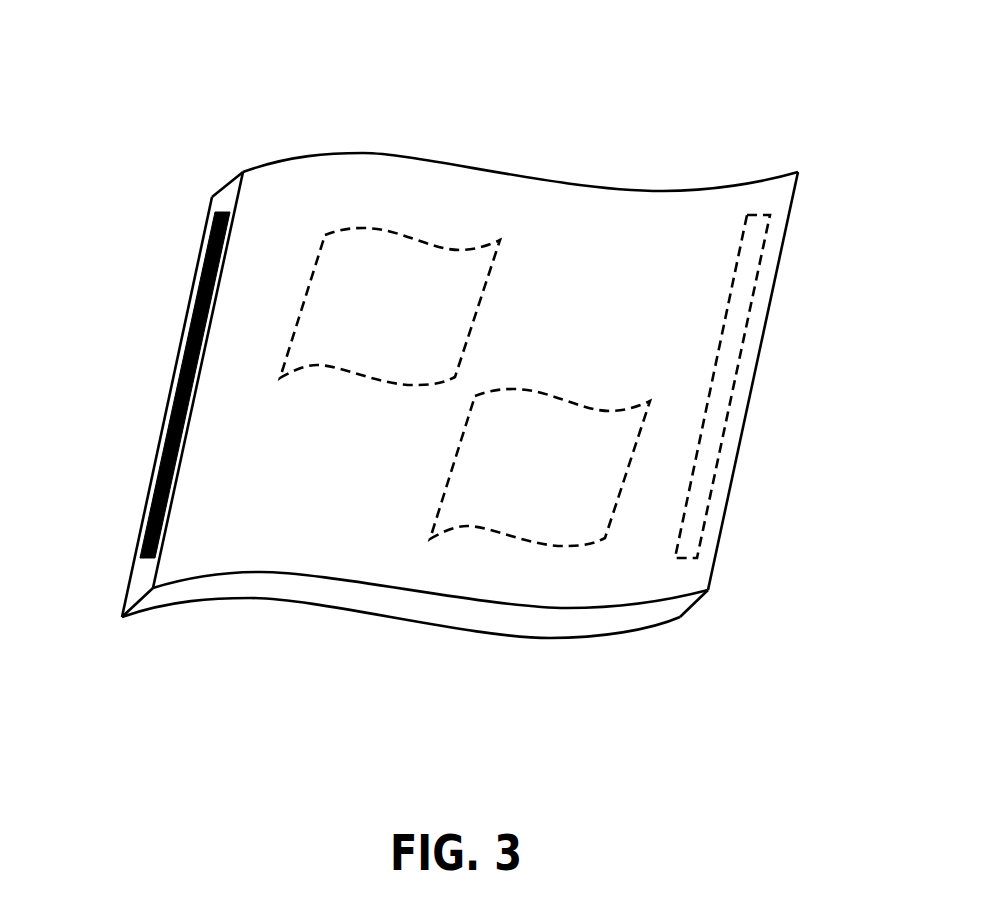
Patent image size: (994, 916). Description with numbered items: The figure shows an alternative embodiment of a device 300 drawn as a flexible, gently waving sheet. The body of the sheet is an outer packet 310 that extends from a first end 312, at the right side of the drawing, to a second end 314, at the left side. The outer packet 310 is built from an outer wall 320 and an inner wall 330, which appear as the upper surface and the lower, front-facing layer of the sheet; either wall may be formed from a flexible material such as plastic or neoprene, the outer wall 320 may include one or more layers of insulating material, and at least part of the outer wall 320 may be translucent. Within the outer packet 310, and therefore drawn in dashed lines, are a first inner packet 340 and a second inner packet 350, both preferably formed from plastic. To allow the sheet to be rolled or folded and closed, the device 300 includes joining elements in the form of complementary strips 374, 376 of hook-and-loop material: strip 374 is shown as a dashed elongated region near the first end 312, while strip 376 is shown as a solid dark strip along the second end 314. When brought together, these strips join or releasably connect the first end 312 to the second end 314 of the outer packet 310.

The device 300 is at (530, 53).
The outer packet 310 is at (578, 192).
The first end 312 is at (708, 590).
The second end 314 is at (228, 197).
The outer wall 320 is at (280, 178).
The inner wall 330 is at (370, 615).
The first inner packet 340 is at (407, 288).
The second inner packet 350 is at (535, 520).
The complementary strip of hook-and-loop material 374 is at (748, 253).
The complementary strip of hook-and-loop material 376 is at (135, 566).